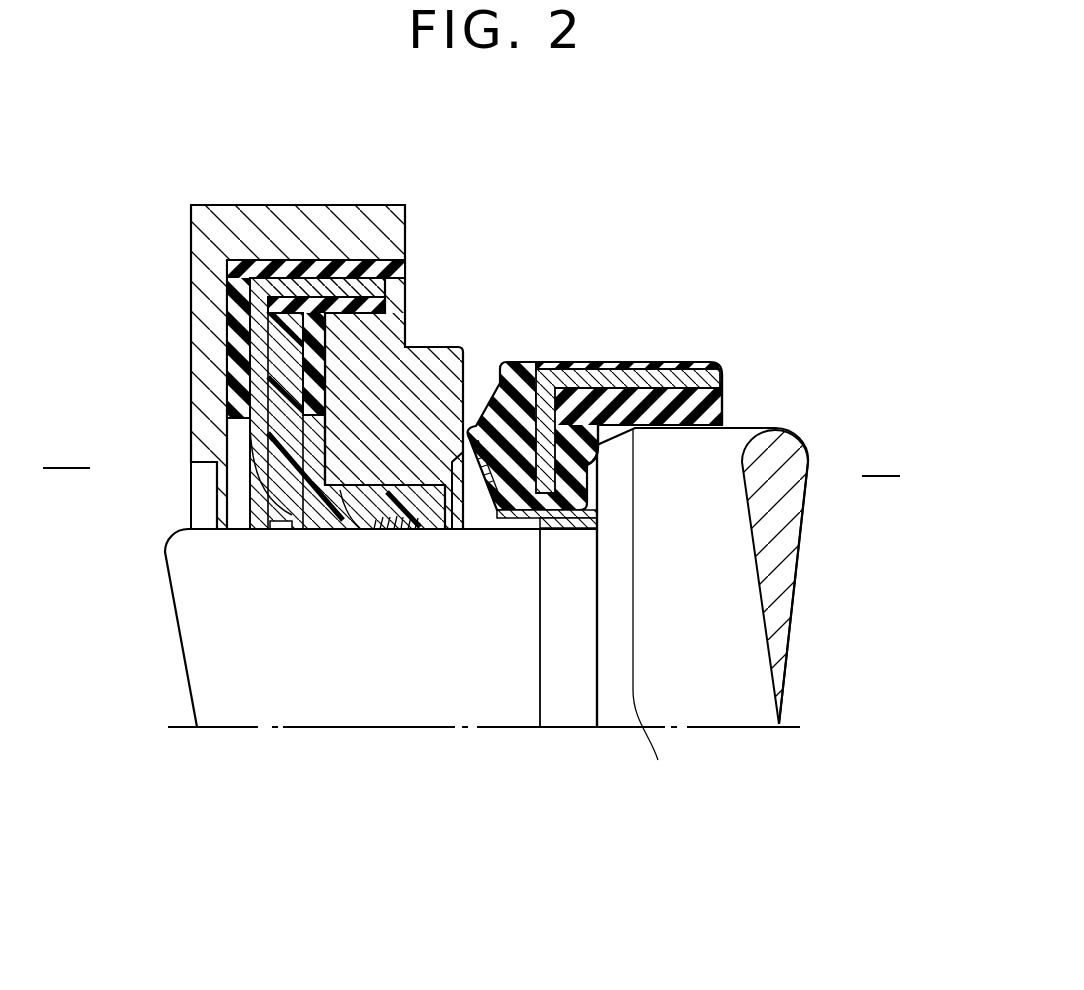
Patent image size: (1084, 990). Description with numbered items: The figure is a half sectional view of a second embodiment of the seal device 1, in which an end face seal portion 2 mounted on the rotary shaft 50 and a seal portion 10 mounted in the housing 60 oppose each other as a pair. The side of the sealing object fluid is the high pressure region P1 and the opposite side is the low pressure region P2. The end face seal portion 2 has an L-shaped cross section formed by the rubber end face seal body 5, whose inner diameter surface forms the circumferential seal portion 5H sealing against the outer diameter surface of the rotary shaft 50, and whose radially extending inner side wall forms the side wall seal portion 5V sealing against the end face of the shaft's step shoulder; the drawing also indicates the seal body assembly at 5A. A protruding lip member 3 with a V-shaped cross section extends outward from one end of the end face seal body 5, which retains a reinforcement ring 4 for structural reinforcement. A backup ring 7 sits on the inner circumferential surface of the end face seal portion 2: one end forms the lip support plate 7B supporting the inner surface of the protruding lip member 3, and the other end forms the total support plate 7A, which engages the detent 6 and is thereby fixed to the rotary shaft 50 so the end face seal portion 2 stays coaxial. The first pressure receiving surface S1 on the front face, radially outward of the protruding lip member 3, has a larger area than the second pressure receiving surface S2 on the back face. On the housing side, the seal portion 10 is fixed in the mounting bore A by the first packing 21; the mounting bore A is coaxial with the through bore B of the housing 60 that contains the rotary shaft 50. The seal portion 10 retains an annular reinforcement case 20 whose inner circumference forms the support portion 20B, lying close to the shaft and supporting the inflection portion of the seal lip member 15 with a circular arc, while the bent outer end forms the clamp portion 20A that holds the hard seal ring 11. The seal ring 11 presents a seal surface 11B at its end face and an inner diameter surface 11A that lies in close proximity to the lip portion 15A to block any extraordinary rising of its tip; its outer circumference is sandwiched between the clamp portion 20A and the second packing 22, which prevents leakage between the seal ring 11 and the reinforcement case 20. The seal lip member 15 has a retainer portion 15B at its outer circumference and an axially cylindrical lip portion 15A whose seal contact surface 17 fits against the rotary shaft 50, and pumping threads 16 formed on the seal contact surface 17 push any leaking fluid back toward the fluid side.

The seal device 1 is at (654, 495).
The end face seal portion 2 is at (654, 548).
The protruding lip member 3 is at (497, 378).
The reinforcement ring 4 is at (613, 380).
The end face seal body 5 is at (702, 576).
The slinger body 5A is at (686, 633).
The side wall seal portion 5V is at (597, 460).
The circumferential seal portion 5H is at (687, 428).
The detent 6 is at (572, 529).
The backup ring 7 is at (534, 674).
The total support plate 7A is at (525, 521).
The lip support plate 7B is at (478, 519).
The seal portion 10 is at (288, 457).
The seal ring 11 is at (299, 530).
The inner diameter surface 11A is at (342, 530).
The seal surface 11B is at (470, 428).
The seal lip member 15 is at (230, 428).
The lip portion 15A is at (410, 530).
The retainer portion 15B is at (289, 300).
The pumping threads 16 is at (388, 487).
The seal contact surface 17 is at (330, 437).
The reinforcement case 20 is at (303, 338).
The clamp portion 20A is at (405, 300).
The support portion 20B is at (250, 508).
The first packing 21 is at (228, 313).
The second packing 22 is at (370, 300).
The rotary shaft 50 is at (782, 555).
The housing 60 is at (224, 232).
The mounting bore A is at (230, 443).
The through bore B is at (207, 522).
The high pressure region P1 is at (881, 460).
The low pressure region P2 is at (66, 453).
The first pressure receiving surface S1 is at (520, 370).
The second pressure receiving surface S2 is at (727, 384).